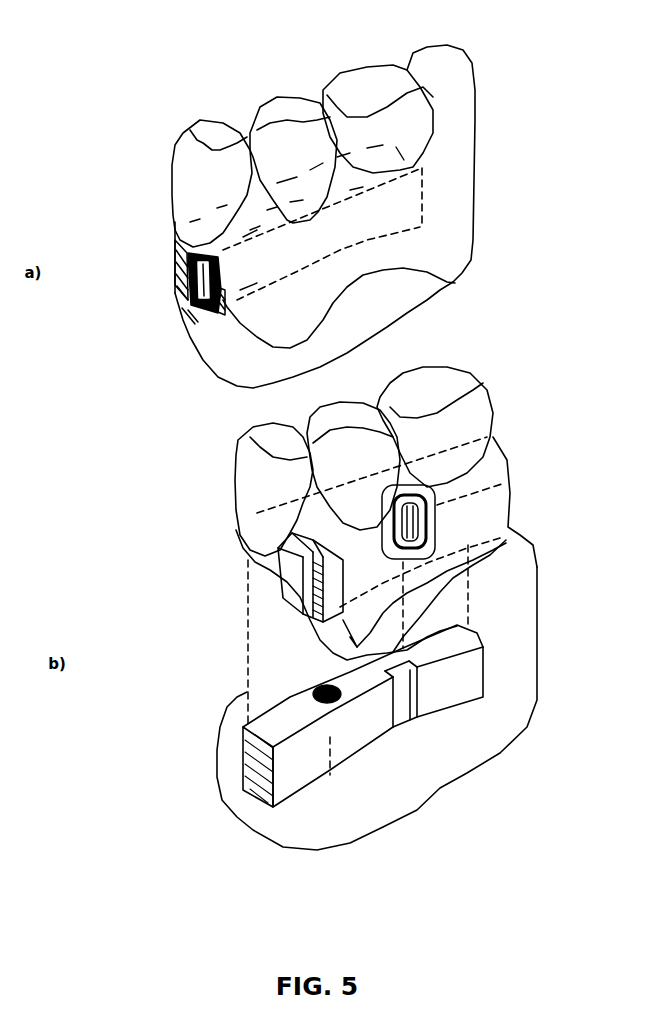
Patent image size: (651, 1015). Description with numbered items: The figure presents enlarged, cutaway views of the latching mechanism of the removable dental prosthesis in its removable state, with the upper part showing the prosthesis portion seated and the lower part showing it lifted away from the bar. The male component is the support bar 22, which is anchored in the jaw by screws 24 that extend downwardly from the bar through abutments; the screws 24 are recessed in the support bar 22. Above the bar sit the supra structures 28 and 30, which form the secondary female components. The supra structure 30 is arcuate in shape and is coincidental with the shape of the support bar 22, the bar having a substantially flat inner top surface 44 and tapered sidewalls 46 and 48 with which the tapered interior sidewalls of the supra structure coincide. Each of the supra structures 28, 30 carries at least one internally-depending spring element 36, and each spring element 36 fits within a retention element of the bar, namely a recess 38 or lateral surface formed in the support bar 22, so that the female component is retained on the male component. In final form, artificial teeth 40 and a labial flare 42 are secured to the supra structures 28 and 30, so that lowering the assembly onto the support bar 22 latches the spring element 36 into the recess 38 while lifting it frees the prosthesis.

The support bar 22 is at (289, 557).
The screws 24 is at (200, 305).
The supra structure 28 is at (312, 614).
The supra structure 30 is at (250, 503).
The spring element 36 is at (205, 305).
The recess 38 is at (412, 718).
The artificial teeth 40 is at (282, 110).
The labial flare 42 is at (488, 460).
The inner top surface 44 is at (245, 727).
The tapered sidewall 46 is at (245, 750).
The tapered sidewall 48 is at (282, 778).